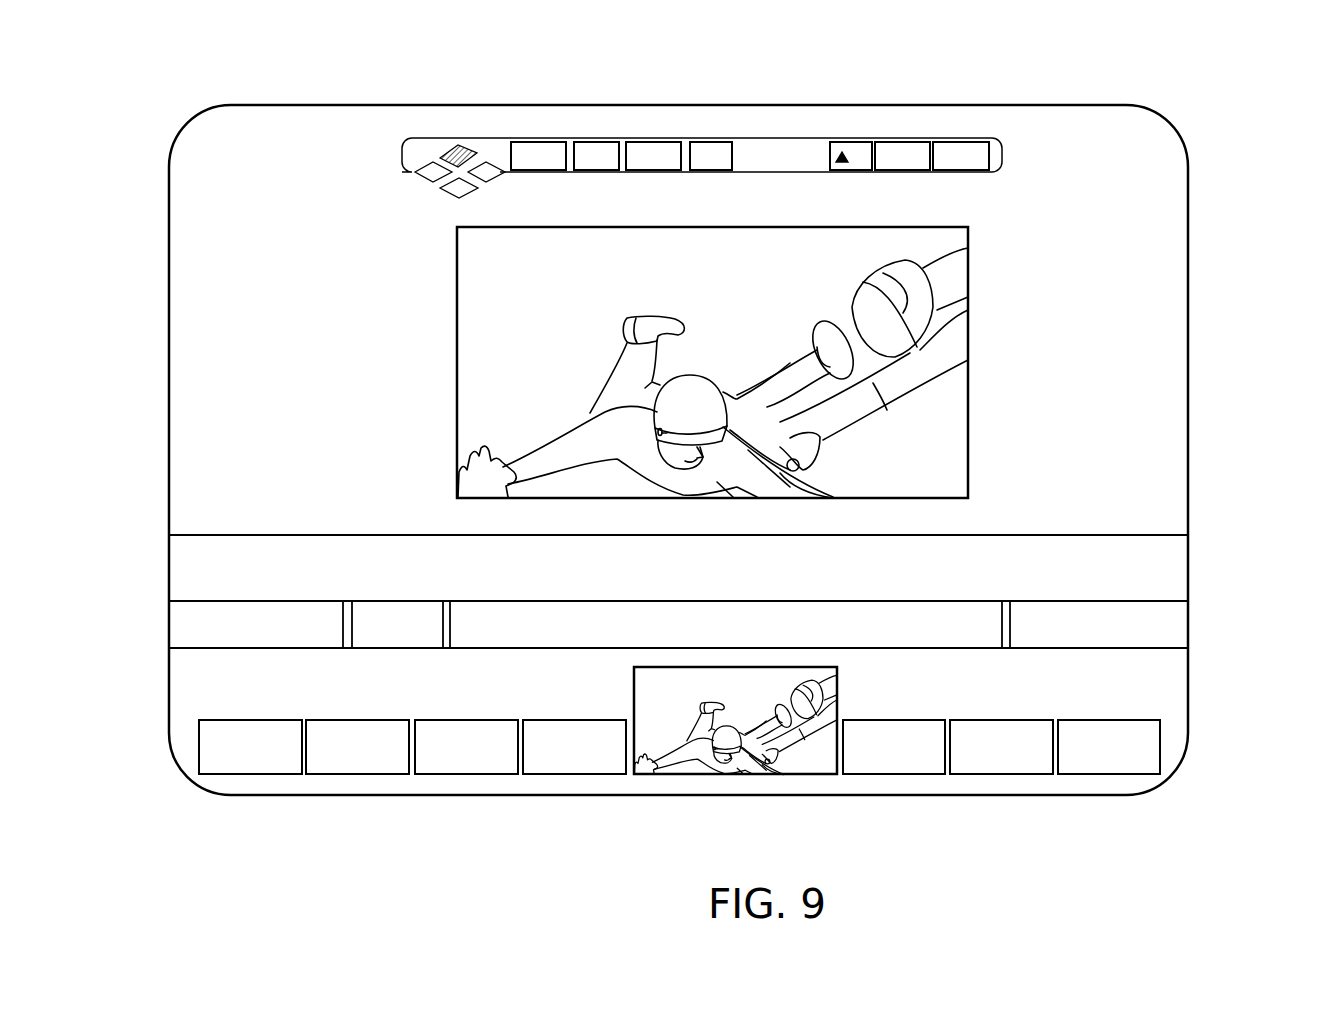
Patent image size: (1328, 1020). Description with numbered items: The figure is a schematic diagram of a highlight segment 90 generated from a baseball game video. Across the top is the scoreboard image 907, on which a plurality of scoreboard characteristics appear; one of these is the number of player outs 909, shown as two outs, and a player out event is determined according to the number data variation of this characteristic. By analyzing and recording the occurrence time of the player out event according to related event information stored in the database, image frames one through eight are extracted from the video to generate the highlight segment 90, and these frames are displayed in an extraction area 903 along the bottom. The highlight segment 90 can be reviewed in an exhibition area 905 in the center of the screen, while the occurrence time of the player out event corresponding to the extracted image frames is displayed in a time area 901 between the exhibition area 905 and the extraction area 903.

The highlight segment 90 is at (1192, 113).
The time area 901 is at (170, 621).
The extraction area 903 is at (205, 758).
The exhibition area 905 is at (457, 455).
The scoreboard image 907 is at (702, 122).
The number of player outs 909 is at (904, 150).